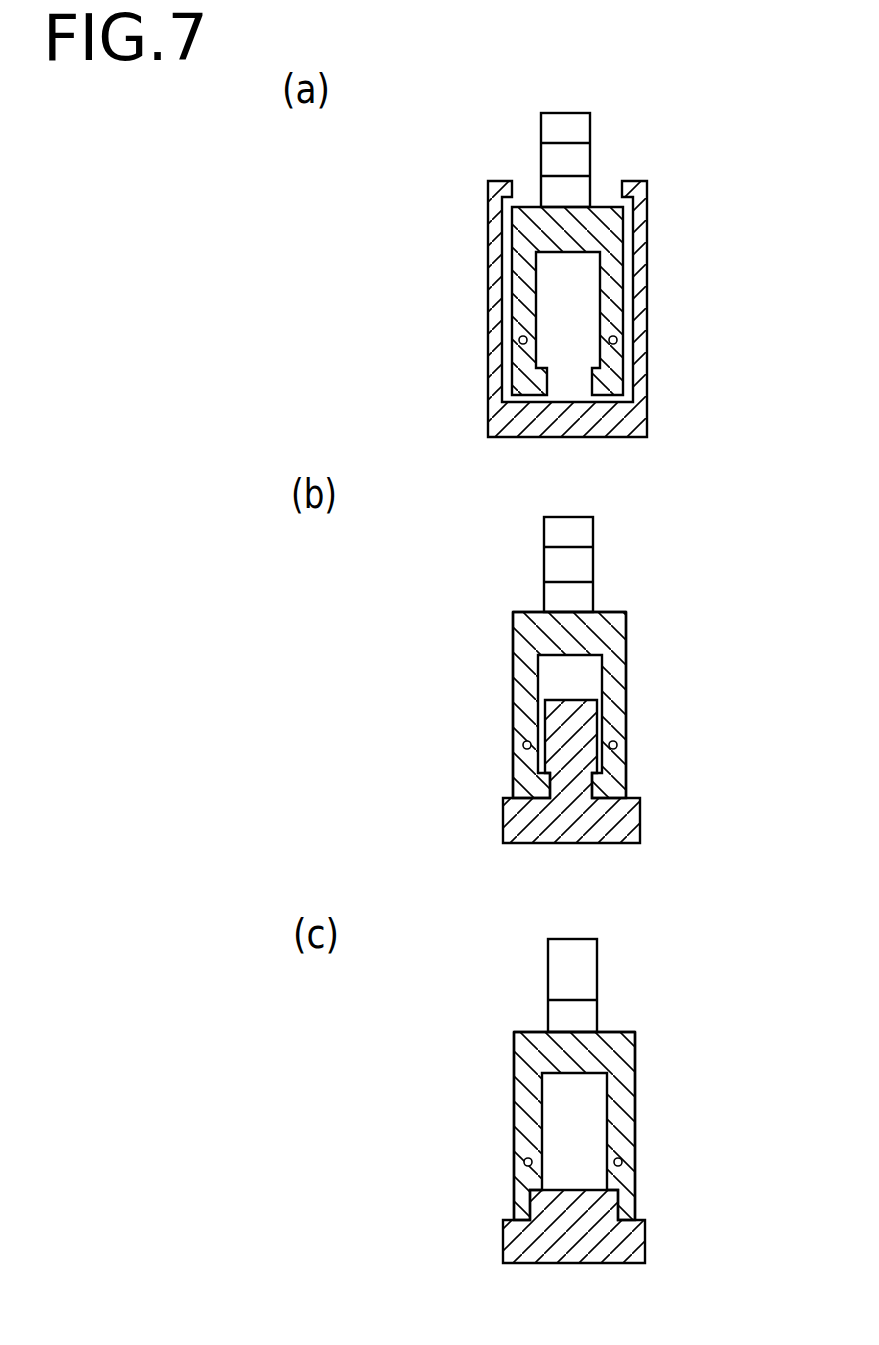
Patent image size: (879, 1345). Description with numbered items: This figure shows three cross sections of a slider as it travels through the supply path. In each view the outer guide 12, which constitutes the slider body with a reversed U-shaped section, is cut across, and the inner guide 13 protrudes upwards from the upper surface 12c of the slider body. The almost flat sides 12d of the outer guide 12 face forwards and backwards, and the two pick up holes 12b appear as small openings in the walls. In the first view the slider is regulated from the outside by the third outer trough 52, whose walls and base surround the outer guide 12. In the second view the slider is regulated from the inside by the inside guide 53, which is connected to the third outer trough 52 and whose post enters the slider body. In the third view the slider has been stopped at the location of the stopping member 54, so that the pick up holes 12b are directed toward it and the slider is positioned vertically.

The outer guide 12 is at (617, 272).
The pick up holes 12b is at (617, 340).
The upper surface 12c is at (523, 611).
The flat sides 12d is at (513, 660).
The inner guide 13 is at (573, 128).
The third outer trough 52 is at (640, 214).
The inside guide 53 is at (640, 822).
The stopping member 54 is at (645, 1233).